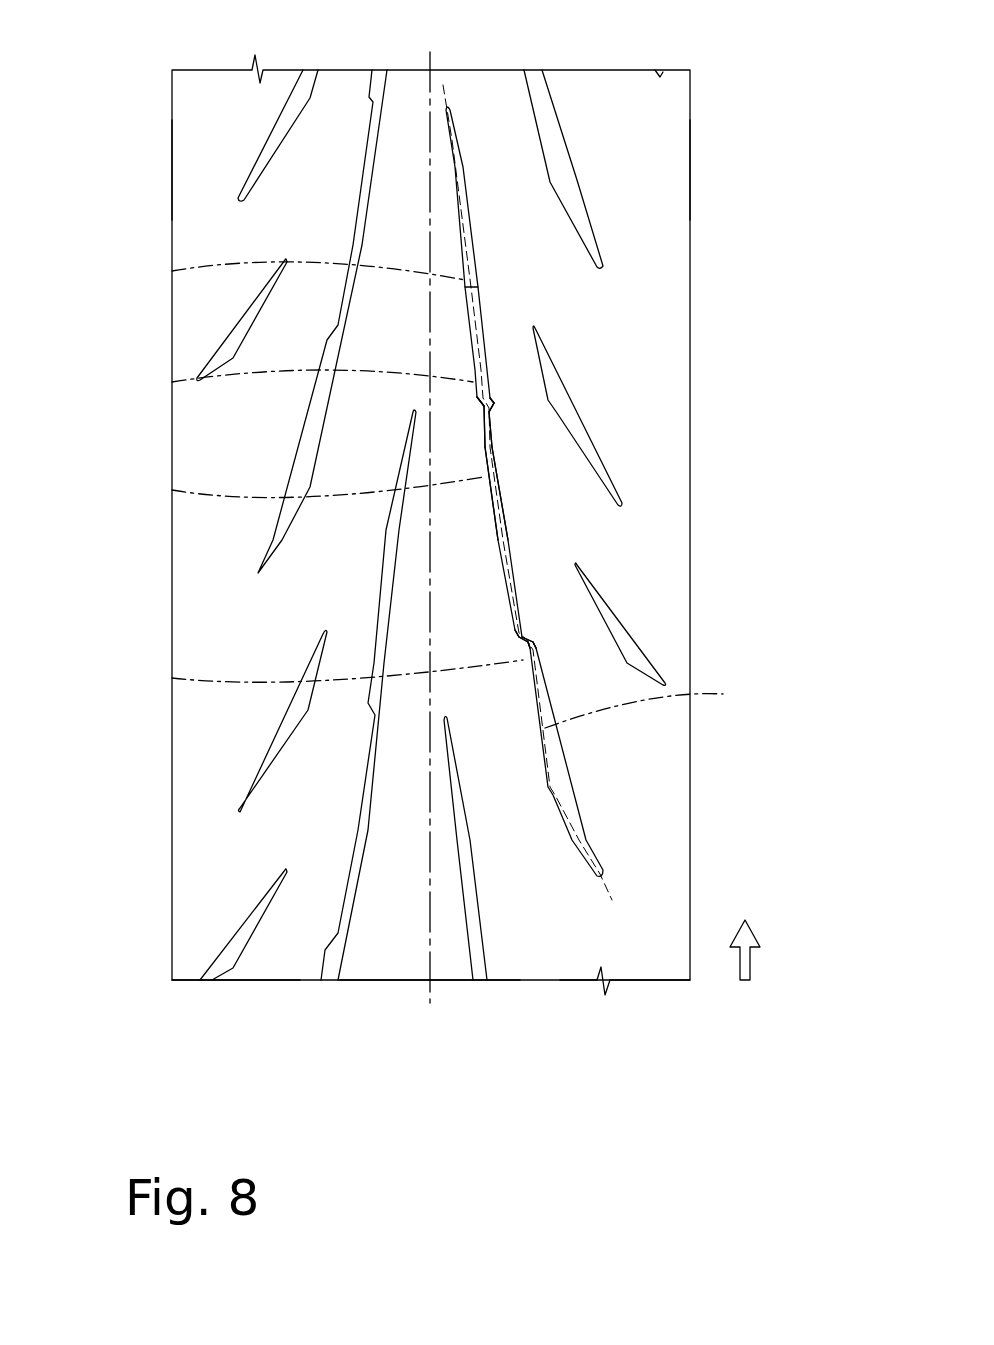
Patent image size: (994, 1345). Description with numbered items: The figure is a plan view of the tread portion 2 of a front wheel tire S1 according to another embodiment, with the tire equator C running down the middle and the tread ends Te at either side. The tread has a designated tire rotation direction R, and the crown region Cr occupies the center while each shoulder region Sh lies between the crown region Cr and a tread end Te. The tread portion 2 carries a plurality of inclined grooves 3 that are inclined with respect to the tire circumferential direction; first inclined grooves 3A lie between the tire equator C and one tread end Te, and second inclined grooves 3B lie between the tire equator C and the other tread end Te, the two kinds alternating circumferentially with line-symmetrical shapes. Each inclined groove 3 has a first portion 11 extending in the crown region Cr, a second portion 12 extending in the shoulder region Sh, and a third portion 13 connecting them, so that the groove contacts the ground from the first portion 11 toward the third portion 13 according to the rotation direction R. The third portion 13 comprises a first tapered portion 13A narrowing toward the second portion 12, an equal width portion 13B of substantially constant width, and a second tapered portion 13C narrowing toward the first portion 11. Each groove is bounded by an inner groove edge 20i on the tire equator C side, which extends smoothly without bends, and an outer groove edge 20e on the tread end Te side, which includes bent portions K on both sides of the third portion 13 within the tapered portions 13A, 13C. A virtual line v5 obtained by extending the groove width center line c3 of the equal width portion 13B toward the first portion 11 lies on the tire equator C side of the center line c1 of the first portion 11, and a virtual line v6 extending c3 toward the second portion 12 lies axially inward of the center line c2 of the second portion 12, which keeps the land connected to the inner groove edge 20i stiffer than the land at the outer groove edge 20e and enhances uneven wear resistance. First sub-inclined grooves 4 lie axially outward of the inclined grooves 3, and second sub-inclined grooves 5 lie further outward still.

The tread portion 2 is at (703, 122).
The inclined groove 3 is at (357, 122).
The first inclined groove 3A is at (583, 180).
The second inclined groove 3B is at (375, 563).
The first sub-inclined groove 4 is at (317, 663).
The second sub-inclined groove 5 is at (247, 930).
The first portion 11 is at (480, 195).
The second portion 12 is at (567, 750).
The third portion 13 is at (518, 532).
The first tapered portion 13A is at (493, 407).
The equal width portion 13B is at (500, 515).
The second tapered portion 13C is at (530, 637).
The bent portion K is at (502, 415).
The outer groove edge 20e is at (480, 289).
The inner groove edge 20i is at (537, 748).
The groove width center line of the first portion c1 is at (172, 271).
The groove width center line of the second portion c2 is at (647, 704).
The groove width center line of the equal width portion c3 is at (172, 490).
The virtual line v5 is at (172, 382).
The virtual line v6 is at (172, 678).
The tire equator C is at (429, 514).
The tread end Te is at (172, 172).
The shoulder region Sh is at (267, 992).
The crown region Cr is at (403, 992).
The tire rotation direction R is at (745, 939).
The front wheel tire S1 is at (758, 22).